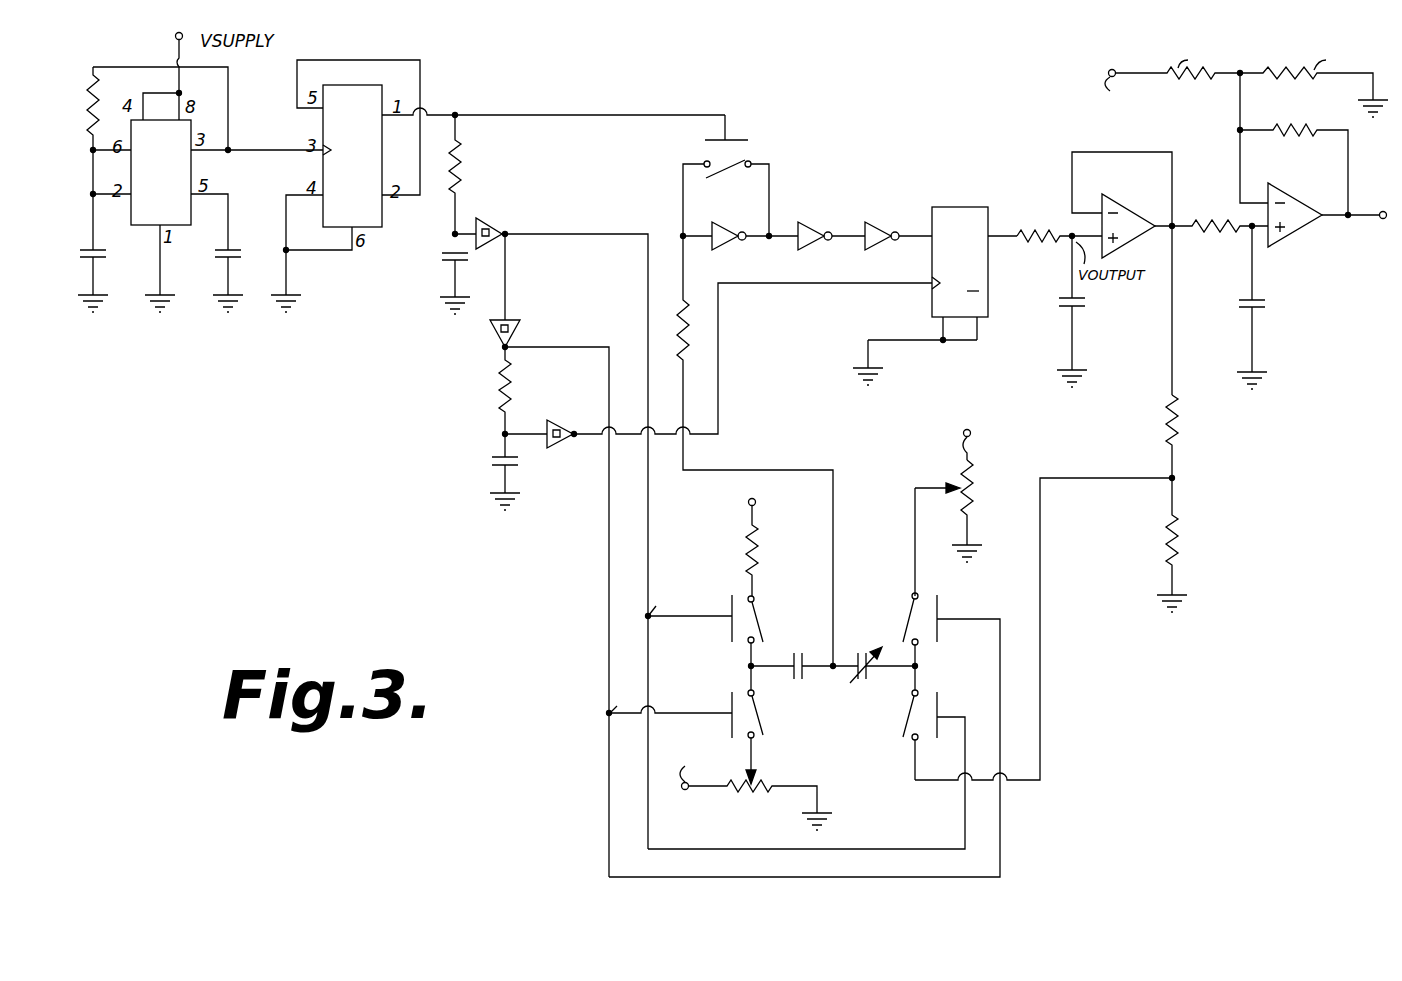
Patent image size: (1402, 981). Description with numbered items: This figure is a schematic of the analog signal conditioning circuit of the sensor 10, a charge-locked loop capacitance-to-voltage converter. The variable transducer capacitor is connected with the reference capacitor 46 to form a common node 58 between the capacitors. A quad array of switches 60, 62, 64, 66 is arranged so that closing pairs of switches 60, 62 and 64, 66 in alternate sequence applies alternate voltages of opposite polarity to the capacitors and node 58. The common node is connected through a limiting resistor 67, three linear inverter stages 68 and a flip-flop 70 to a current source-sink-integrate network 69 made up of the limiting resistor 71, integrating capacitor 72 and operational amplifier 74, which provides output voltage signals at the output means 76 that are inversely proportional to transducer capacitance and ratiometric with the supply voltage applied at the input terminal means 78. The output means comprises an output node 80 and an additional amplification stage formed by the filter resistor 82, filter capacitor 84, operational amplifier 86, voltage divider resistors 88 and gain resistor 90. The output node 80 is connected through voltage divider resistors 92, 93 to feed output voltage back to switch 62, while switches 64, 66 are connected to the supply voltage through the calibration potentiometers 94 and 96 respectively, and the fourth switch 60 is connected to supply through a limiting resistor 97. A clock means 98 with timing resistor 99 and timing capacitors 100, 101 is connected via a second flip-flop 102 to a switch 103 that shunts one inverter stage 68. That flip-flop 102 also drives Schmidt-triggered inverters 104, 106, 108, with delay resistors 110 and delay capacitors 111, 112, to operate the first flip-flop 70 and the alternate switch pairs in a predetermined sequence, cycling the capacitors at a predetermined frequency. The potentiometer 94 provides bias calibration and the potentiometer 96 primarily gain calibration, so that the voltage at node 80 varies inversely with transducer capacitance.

The sensor 10 is at (916, 108).
The reference capacitor 46 is at (800, 680).
The common node 58 is at (866, 672).
The switch 60 is at (761, 625).
The switch 62 is at (904, 734).
The switch 64 is at (766, 730).
The switch 66 is at (902, 626).
The limiting resistor 67 is at (690, 340).
The linear inverter stages 68 is at (807, 224).
The current source-sink-integrate network 69 is at (1056, 198).
The flip-flop 70 is at (976, 190).
The limiting resistor 71 is at (1048, 224).
The integrating capacitor 72 is at (1086, 304).
The operational amplifier 74 is at (1136, 212).
The output means 76 is at (1114, 138).
The input terminal means 78 is at (895, 429).
The output node 80 is at (1180, 230).
The filter resistor 82 is at (1222, 220).
The filter capacitor 84 is at (1240, 306).
The operational amplifier 86 is at (1287, 230).
The voltage divider resistors 88 is at (1251, 82).
The gain resistor 90 is at (1289, 124).
The voltage divider resistor 92 is at (1179, 422).
The voltage divider resistor 93 is at (1179, 532).
The potentiometer 94 is at (766, 782).
The potentiometer 96 is at (974, 492).
The limiting resistor 97 is at (759, 554).
The clock means 98 is at (186, 174).
The timing resistor 99 is at (104, 108).
The timing capacitor 100 is at (106, 262).
The timing capacitor 101 is at (262, 248).
The second flip-flop 102 is at (356, 85).
The switch 103 is at (736, 161).
The Schmidt-triggered inverter 104 is at (552, 426).
The Schmidt-triggered inverter 106 is at (500, 224).
The Schmidt-triggered inverter 108 is at (514, 332).
The delay resistors 110 is at (460, 180).
The delay capacitor 111 is at (434, 283).
The delay capacitor 112 is at (480, 462).